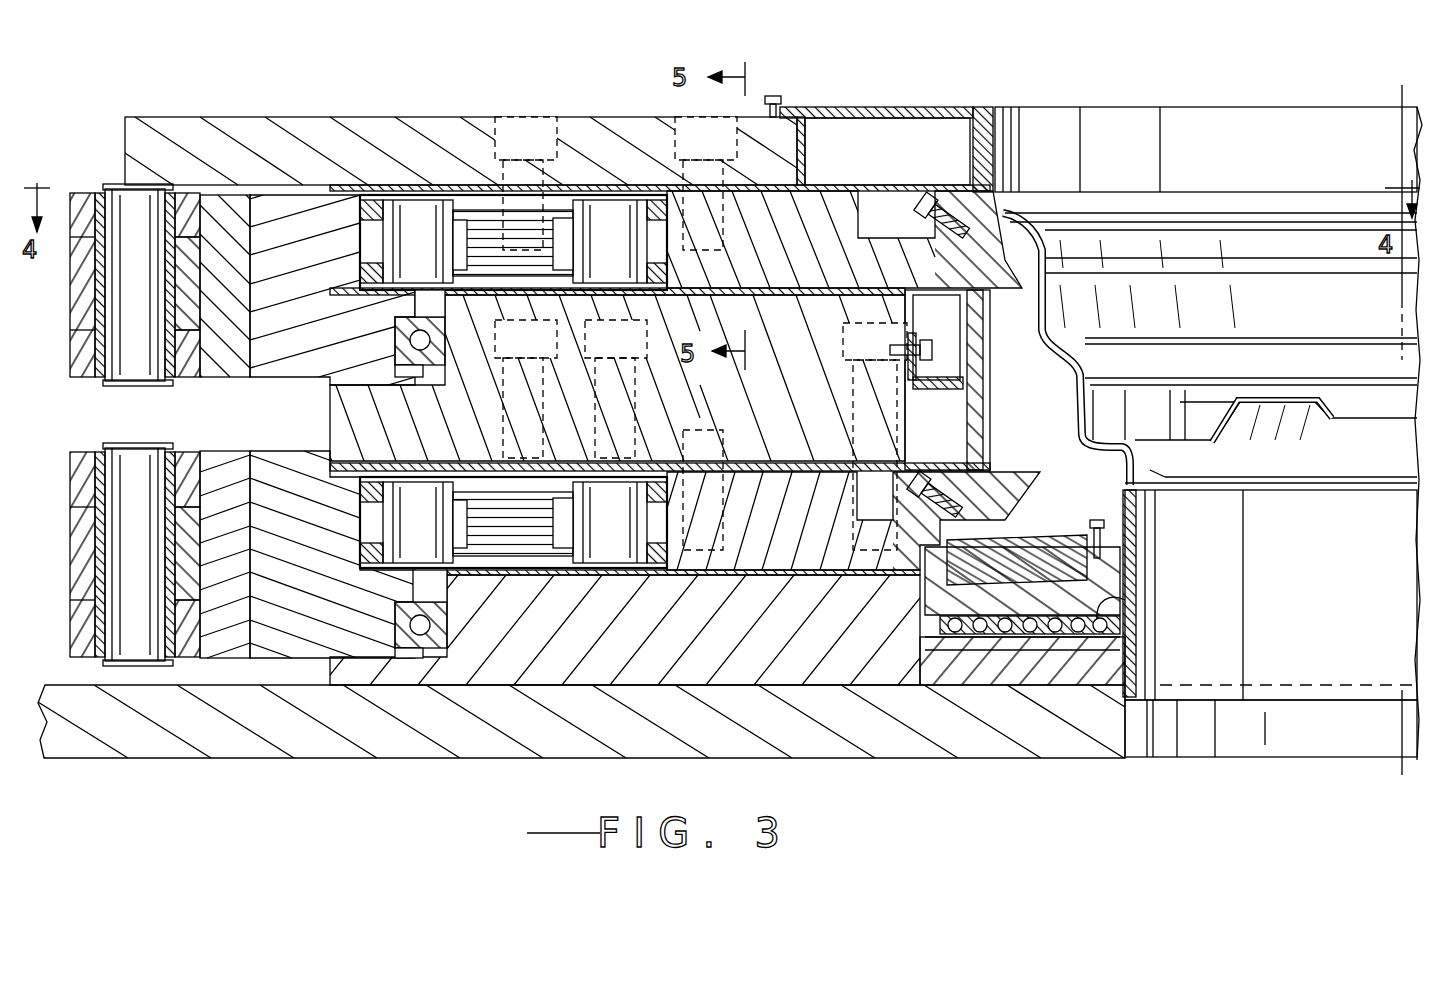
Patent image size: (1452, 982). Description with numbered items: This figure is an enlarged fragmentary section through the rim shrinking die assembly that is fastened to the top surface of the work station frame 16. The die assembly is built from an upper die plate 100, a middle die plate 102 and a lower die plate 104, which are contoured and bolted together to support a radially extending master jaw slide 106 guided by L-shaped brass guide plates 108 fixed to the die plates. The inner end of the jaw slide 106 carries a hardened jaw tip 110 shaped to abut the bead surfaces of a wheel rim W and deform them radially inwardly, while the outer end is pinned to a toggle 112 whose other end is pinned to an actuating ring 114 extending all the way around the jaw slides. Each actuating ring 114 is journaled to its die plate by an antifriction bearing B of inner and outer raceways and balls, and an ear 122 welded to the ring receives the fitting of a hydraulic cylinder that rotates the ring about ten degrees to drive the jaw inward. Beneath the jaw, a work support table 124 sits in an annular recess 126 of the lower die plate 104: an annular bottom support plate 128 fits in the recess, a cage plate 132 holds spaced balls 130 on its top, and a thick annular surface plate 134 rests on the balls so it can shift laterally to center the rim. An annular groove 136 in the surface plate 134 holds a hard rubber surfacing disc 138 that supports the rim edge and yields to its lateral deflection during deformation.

The work station frame 16 is at (233, 752).
The upper die plate 100 is at (648, 120).
The middle die plate 102 is at (814, 393).
The lower die plate 104 is at (826, 660).
The master jaw slide 106 is at (812, 253).
The L-shaped brass guide plate 108 is at (880, 186).
The hardened jaw tip 110 is at (1012, 262).
The toggle 112 is at (488, 205).
The actuating ring 114 is at (302, 212).
The ear 122 is at (70, 575).
The work support table 124 is at (1000, 652).
The annular recess 126 is at (950, 652).
The annular bottom support plate 128 is at (1080, 650).
The balls 130 is at (1115, 600).
The cage plate 132 is at (1115, 628).
The annular surface plate 134 is at (1110, 572).
The annular groove 136 is at (940, 583).
The hard rubber surfacing disc 138 is at (1100, 545).
The wheel W is at (1255, 208).
The antifriction bearing B is at (445, 342).